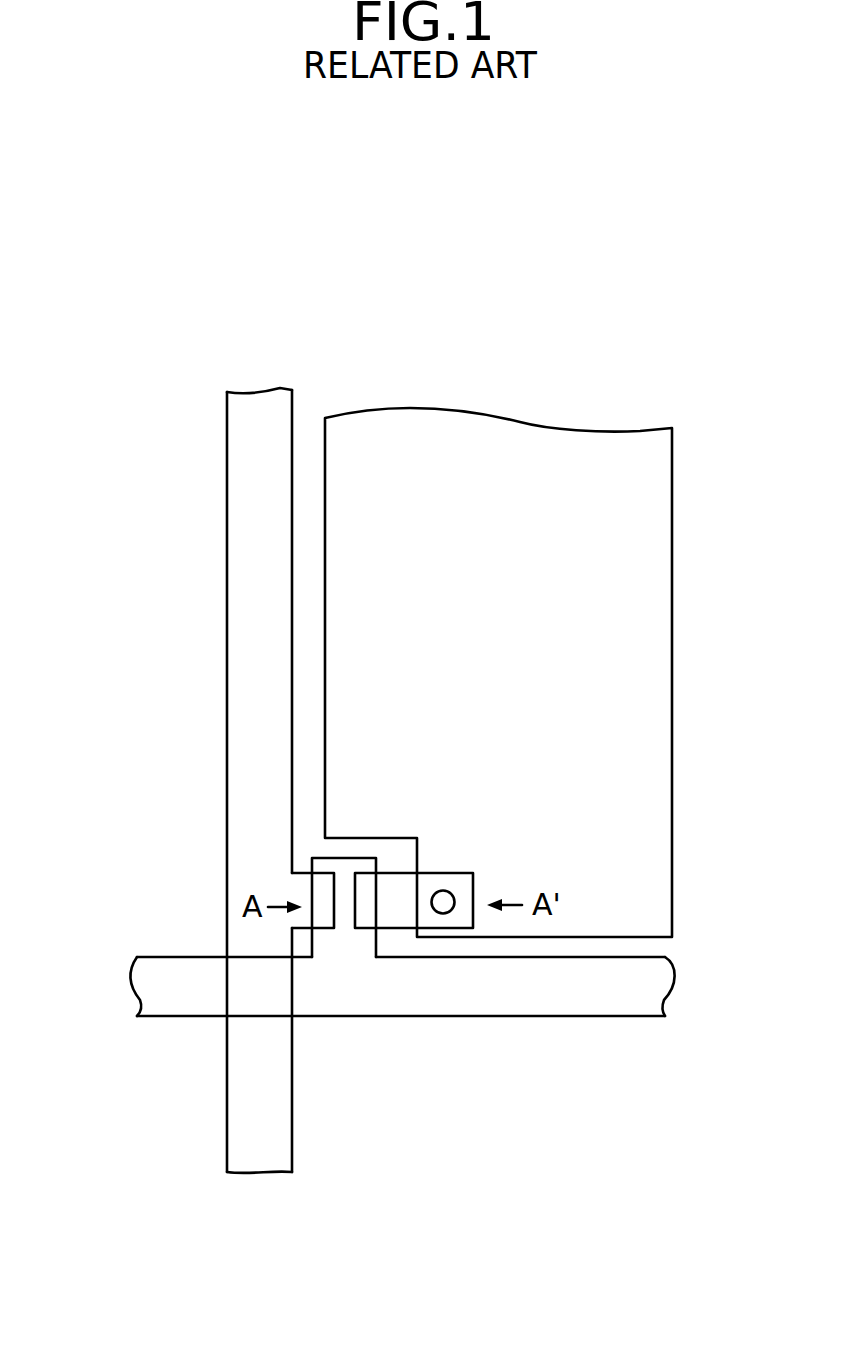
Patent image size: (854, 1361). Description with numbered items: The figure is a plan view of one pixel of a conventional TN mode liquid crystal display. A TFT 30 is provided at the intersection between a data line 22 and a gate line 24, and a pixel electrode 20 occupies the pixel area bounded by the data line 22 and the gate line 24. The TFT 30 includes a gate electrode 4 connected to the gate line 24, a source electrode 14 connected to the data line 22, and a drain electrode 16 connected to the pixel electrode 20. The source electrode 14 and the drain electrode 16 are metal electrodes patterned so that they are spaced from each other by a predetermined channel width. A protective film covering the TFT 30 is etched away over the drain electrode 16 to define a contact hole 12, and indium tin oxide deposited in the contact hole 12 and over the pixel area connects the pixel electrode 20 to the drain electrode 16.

The gate electrode 4 is at (350, 867).
The contact hole 12 is at (452, 884).
The source electrode 14 is at (317, 888).
The drain electrode 16 is at (452, 892).
The pixel electrode 20 is at (661, 838).
The data line 22 is at (253, 1140).
The gate line 24 is at (667, 973).
The TFT 30 is at (360, 842).